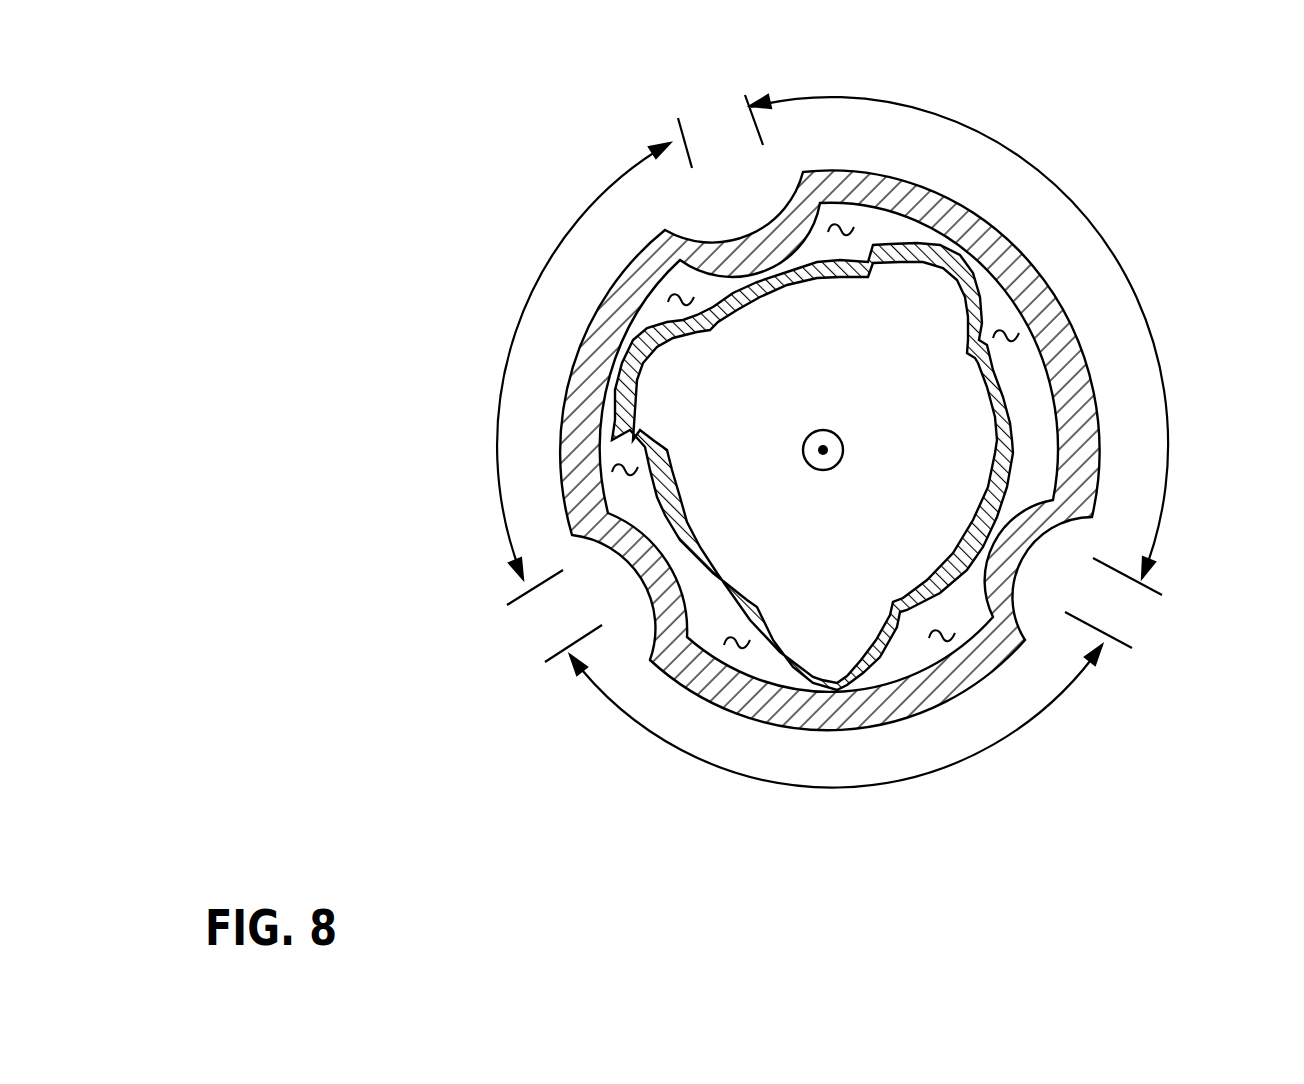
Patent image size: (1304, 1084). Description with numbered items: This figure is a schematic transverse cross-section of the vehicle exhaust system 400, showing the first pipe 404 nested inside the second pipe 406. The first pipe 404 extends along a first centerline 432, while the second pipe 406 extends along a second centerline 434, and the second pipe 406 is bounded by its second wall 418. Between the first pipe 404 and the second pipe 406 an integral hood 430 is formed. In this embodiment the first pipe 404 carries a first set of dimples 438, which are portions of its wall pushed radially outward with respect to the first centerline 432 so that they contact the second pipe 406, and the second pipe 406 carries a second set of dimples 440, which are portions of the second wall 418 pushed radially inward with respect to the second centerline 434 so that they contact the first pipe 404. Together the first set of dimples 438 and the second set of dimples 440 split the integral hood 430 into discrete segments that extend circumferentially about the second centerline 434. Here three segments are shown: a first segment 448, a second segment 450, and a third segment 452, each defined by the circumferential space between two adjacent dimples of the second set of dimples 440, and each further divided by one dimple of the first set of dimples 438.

The vehicle exhaust system 400 is at (333, 152).
The first pipe 404 is at (1023, 443).
The second pipe 406 is at (703, 590).
The second wall 418 is at (1027, 580).
The integral hood 430 is at (680, 298).
The first centerline 432 is at (591, 410).
The second centerline 434 is at (803, 446).
The first set of dimples 438 is at (647, 328).
The second set of dimples 440 is at (797, 237).
The first segment 448 is at (1167, 430).
The second segment 450 is at (1045, 712).
The third segment 452 is at (518, 311).